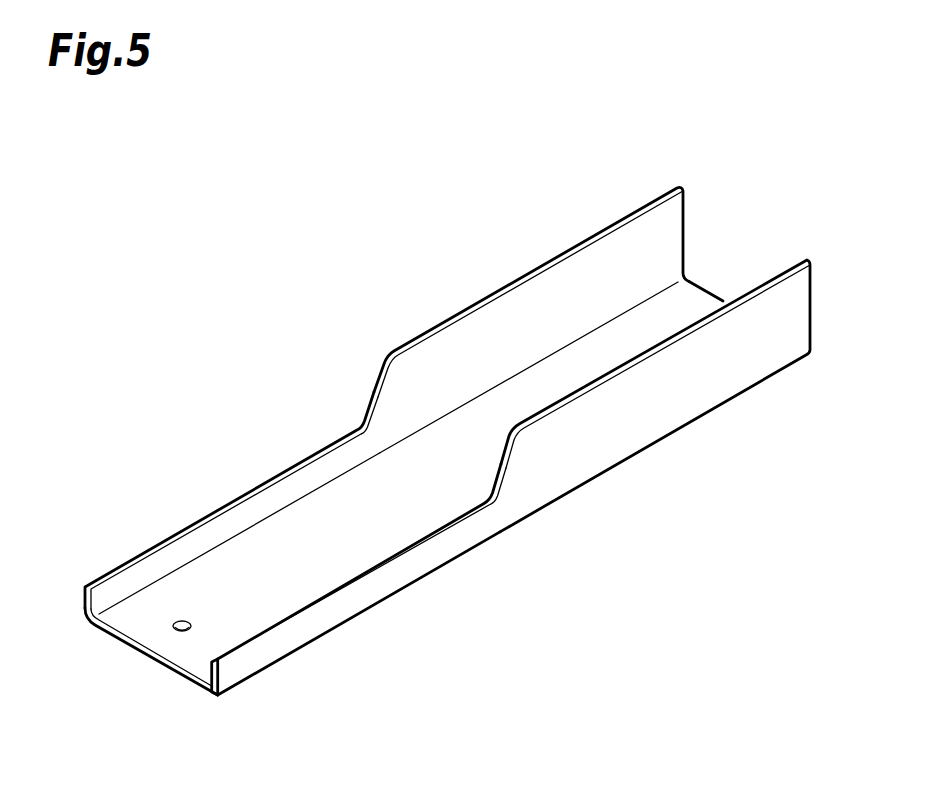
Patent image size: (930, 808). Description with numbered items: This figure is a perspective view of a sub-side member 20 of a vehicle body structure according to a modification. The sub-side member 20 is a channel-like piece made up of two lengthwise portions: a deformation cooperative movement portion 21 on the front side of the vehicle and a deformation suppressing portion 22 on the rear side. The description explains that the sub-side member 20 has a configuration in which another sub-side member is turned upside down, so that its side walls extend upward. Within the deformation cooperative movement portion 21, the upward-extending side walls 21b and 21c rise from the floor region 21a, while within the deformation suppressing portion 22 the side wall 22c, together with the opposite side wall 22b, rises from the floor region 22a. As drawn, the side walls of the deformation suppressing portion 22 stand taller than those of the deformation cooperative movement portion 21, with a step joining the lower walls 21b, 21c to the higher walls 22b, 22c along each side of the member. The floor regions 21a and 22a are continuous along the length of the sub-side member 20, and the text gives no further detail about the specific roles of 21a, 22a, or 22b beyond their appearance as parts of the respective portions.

The sub-side member 20 is at (297, 243).
The deformation cooperative movement portion 21 is at (496, 556).
The base plate of first portion 21a is at (207, 587).
The side wall 21b is at (113, 592).
The side wall 21c is at (237, 662).
The deformation suppressing portion 22 is at (810, 372).
The base plate of second portion 22a is at (598, 347).
The rear side flange of second portion 22b is at (483, 337).
The side wall 22c is at (562, 435).